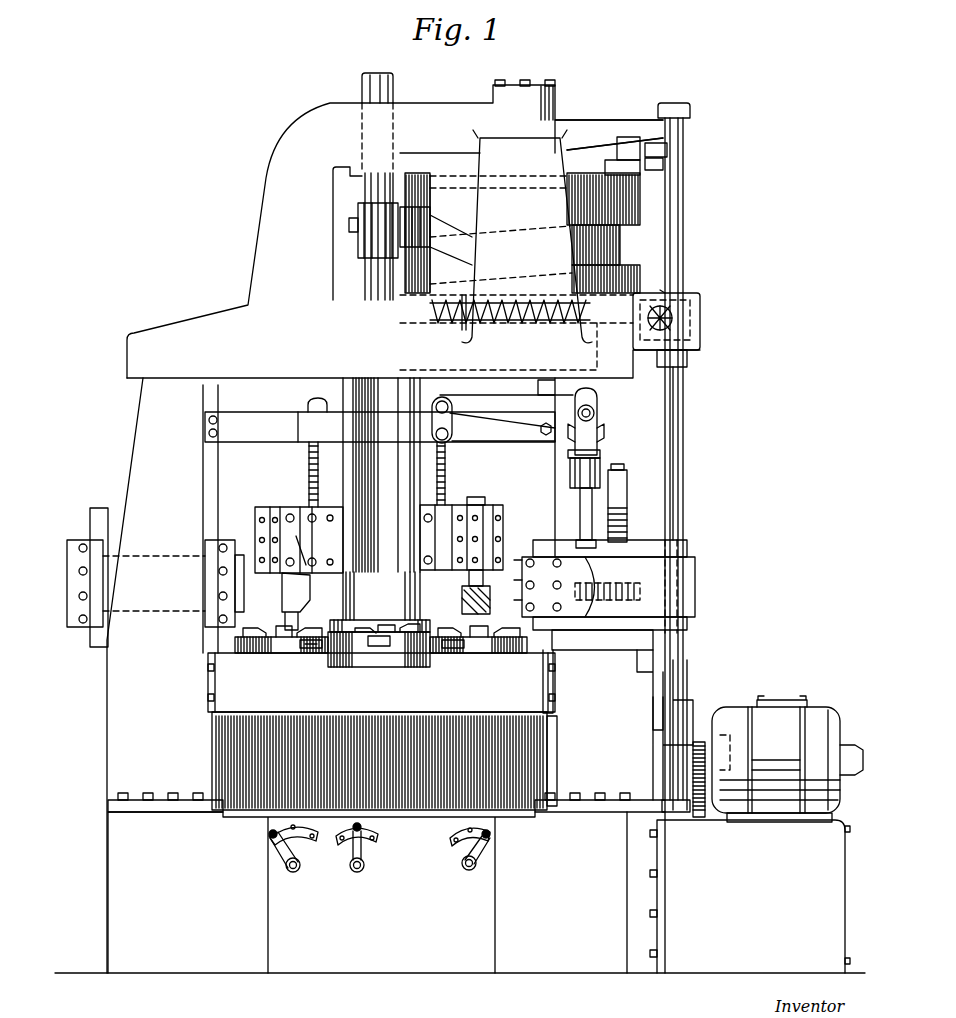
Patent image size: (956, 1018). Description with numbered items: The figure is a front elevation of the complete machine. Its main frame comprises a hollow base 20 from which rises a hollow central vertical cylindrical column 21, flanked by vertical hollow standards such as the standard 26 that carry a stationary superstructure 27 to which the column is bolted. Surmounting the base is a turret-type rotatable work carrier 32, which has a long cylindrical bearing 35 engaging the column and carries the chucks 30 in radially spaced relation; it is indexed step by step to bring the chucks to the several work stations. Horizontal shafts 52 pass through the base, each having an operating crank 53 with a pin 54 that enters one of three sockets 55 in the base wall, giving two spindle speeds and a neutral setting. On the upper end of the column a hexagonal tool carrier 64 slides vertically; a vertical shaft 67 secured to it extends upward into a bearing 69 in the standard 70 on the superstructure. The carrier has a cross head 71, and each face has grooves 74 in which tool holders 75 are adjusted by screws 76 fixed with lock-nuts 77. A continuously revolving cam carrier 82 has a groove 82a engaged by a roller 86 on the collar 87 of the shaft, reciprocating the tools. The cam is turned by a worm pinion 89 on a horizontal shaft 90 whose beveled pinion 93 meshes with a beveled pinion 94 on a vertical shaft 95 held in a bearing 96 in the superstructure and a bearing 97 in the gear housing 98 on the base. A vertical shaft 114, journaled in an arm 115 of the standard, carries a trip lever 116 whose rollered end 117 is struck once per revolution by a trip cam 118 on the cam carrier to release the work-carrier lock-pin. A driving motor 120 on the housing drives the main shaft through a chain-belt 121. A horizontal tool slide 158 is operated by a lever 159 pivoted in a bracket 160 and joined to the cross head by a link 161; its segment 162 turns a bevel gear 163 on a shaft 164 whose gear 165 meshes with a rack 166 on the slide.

The base 20 is at (338, 962).
The central vertical cylindrical column 21 is at (381, 596).
The vertical hollow standard 26 is at (605, 465).
The stationary superstructure 27 is at (182, 335).
The chuck 30 is at (268, 648).
The rotatable work carrier 32 is at (382, 731).
The cylindrical bearing 35 is at (376, 624).
The shaft 52 is at (300, 868).
The operating crank 53 is at (292, 848).
The pin 54 is at (268, 834).
The socket 55 is at (316, 820).
The cylindrical tool carrier 64 is at (395, 470).
The vertical shaft 67 is at (372, 280).
The bearing 69 is at (362, 172).
The standard 70 is at (280, 172).
The cross head 71 is at (290, 438).
The groove 74 is at (492, 492).
The tool holder 75 is at (265, 525).
The screw 76 is at (318, 477).
The lock-nut 77 is at (325, 385).
The cam carrier 82 is at (511, 236).
The groove 82a is at (630, 220).
The roller 86 is at (432, 222).
The collar 87 is at (357, 230).
The worm pinion 89 is at (512, 330).
The horizontal shaft 90 is at (455, 332).
The beveled pinion 93 is at (676, 290).
The beveled pinion 94 is at (692, 313).
The vertical shaft 95 is at (672, 418).
The bearing 96 is at (688, 360).
The bearing 97 is at (680, 818).
The gear housing 98 is at (750, 896).
The vertical shaft 114 is at (684, 228).
The arm 115 is at (598, 125).
The trip lever 116 is at (667, 151).
The rollered end 117 is at (648, 168).
The trip cam 118 is at (618, 160).
The driving motor 120 is at (780, 712).
The chain-belt 121 is at (706, 812).
The horizontal tool slide 158 is at (78, 535).
The lever 159 is at (500, 398).
The bracket 160 is at (602, 422).
The link 161 is at (431, 420).
The segment 162 is at (594, 413).
The bevel gear 163 is at (604, 438).
The shaft 164 is at (614, 508).
The gear 165 is at (600, 578).
The rack 166 is at (622, 601).